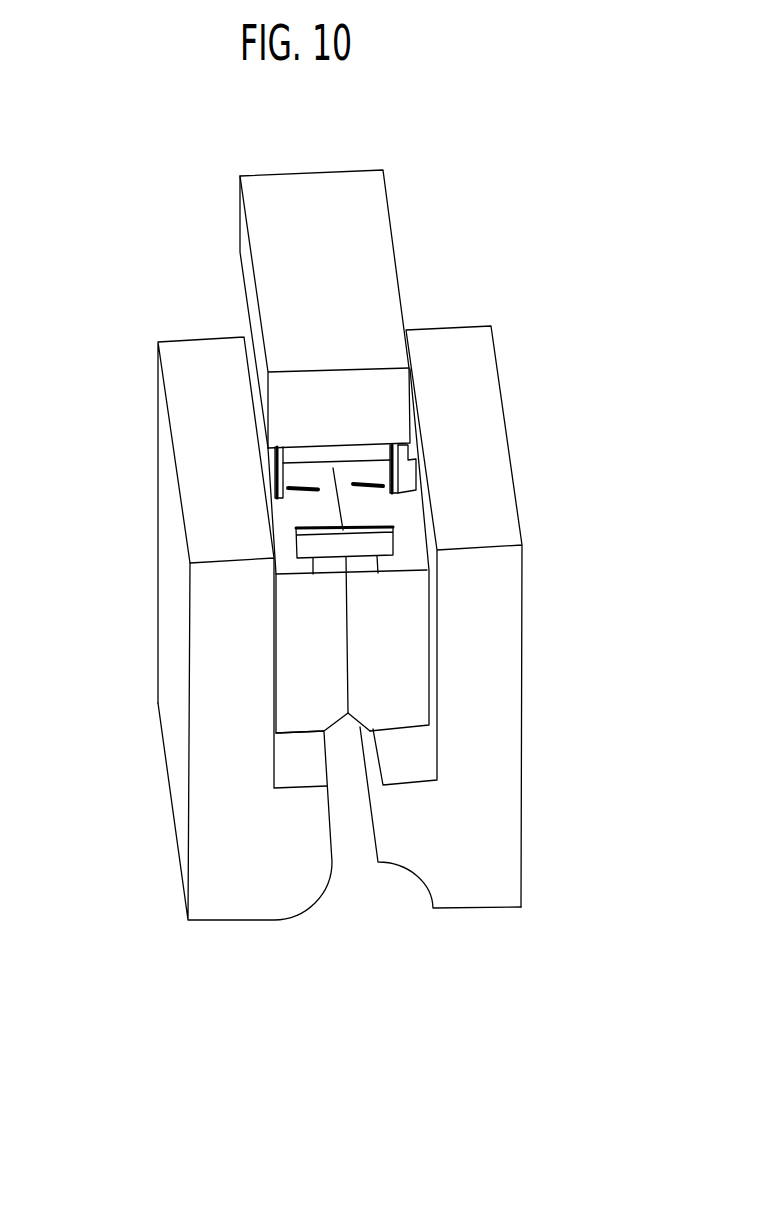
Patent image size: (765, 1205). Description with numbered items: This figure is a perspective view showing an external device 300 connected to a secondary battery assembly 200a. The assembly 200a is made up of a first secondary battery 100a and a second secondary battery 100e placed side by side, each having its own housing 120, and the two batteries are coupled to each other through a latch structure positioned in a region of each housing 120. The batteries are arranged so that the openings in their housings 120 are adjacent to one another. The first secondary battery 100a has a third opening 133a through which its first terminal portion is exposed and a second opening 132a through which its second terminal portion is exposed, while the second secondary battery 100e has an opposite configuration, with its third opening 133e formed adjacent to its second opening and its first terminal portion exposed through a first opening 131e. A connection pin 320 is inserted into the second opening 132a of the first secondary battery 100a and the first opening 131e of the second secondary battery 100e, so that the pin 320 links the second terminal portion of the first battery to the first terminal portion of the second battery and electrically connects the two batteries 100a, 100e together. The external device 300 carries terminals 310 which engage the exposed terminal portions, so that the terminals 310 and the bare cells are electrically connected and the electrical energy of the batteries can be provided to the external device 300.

The external device 300 is at (332, 188).
The first secondary battery 100a is at (136, 368).
The second secondary battery 100e is at (518, 368).
The terminals 310 is at (400, 465).
The third opening 133a is at (287, 488).
The third opening 133e is at (386, 487).
The connection pin 320 is at (384, 540).
The second opening 132a is at (313, 573).
The first opening 131e is at (377, 573).
The housing 120 is at (177, 770).
The secondary battery assembly 200a is at (149, 958).